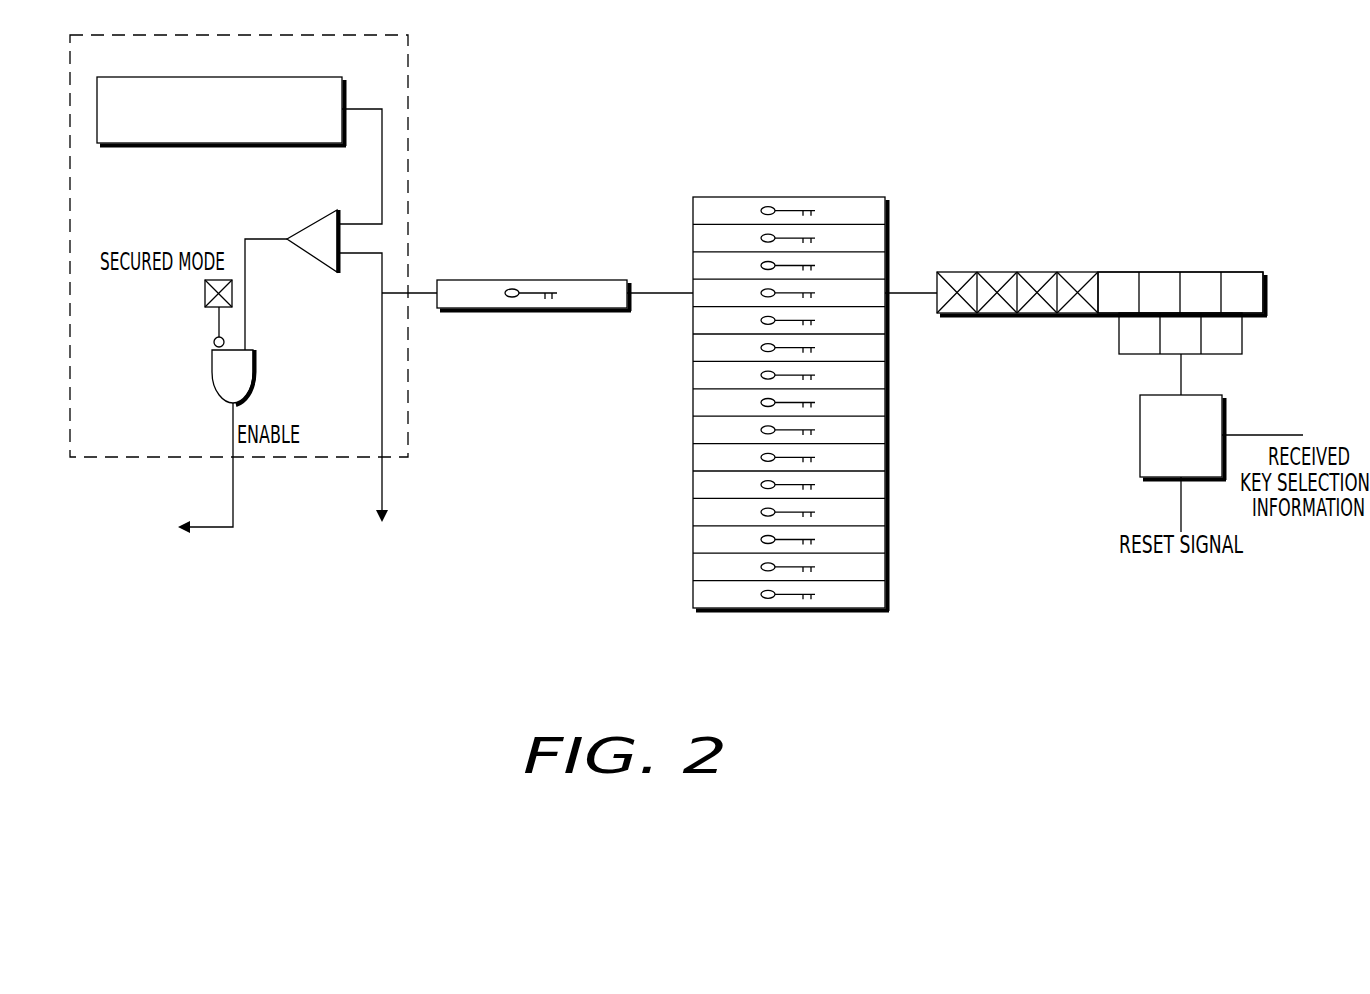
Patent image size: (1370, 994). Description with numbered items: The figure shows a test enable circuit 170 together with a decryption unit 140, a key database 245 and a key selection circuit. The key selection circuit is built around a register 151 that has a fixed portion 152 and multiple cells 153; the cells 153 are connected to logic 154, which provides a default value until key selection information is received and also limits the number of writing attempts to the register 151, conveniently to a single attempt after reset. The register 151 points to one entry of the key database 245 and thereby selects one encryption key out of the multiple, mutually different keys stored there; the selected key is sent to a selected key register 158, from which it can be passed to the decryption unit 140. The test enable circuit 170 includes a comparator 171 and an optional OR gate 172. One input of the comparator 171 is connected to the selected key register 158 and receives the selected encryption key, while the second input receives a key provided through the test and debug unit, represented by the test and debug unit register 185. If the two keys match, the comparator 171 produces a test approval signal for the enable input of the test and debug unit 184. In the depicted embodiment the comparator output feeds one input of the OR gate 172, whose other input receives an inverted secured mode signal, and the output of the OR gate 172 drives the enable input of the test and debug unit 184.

The decryption unit 140 is at (409, 560).
The register 151 is at (1150, 333).
The fixed portion 152 is at (1078, 316).
The cells 153 is at (1233, 272).
The logic 154 is at (1148, 481).
The selected key register 158 is at (577, 278).
The test enable circuit 170 is at (129, 443).
The comparator 171 is at (313, 222).
The OR gate 172 is at (255, 358).
The test and debug unit 184 is at (220, 495).
The test and debug unit register 185 is at (297, 145).
The key database 245 is at (858, 196).